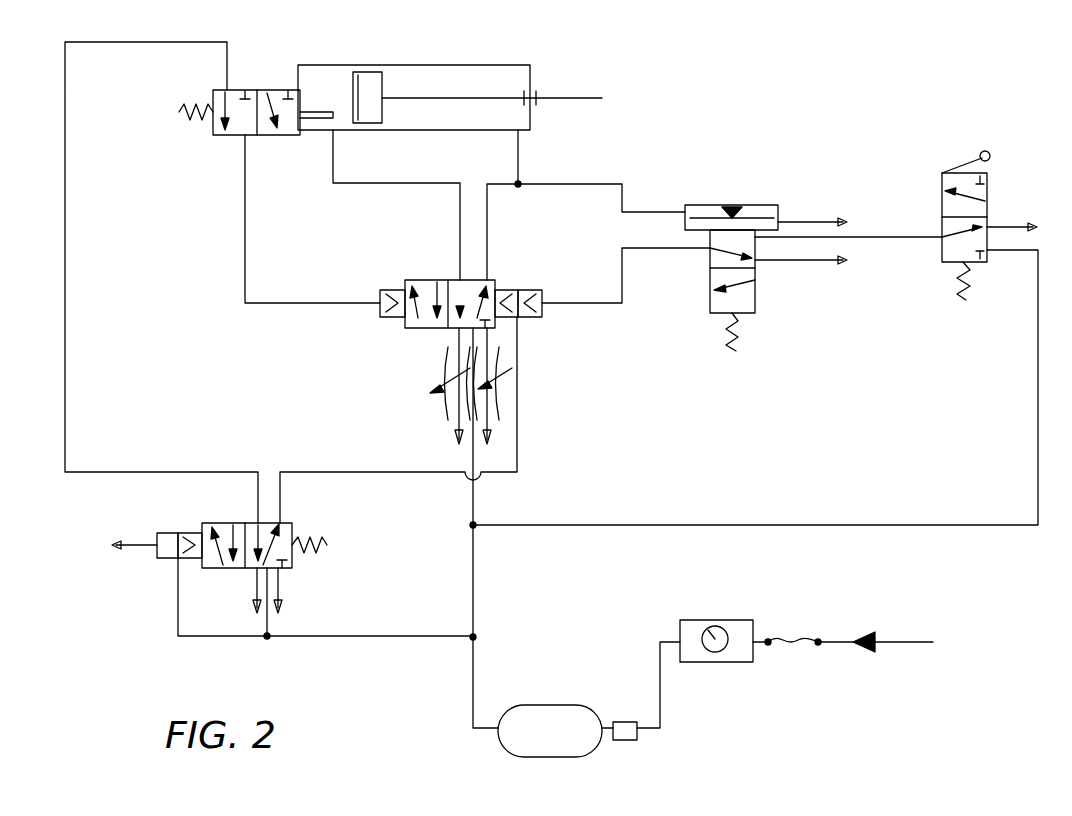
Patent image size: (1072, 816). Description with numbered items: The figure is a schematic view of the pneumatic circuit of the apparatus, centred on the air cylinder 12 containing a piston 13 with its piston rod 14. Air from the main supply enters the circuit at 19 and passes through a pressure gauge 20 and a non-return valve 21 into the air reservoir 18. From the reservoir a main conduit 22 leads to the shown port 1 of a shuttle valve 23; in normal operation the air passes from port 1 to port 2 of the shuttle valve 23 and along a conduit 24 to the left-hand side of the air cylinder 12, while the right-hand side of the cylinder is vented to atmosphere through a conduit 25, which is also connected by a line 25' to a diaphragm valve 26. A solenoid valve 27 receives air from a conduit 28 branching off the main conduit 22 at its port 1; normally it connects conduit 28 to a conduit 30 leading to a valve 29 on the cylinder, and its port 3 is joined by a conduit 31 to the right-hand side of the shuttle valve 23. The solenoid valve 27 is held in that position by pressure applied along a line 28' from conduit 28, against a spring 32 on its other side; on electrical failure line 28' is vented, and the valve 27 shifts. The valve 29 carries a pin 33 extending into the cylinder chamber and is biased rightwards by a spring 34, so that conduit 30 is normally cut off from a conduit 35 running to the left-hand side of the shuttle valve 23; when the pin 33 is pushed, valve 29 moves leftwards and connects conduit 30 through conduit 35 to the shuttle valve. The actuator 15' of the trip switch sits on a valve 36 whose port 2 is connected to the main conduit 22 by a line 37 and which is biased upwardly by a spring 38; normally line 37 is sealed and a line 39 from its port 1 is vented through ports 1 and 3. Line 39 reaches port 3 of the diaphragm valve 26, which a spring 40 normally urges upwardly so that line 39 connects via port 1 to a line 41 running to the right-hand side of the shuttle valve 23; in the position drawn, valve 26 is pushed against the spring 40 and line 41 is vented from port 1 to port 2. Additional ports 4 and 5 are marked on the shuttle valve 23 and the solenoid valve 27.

The air cylinder 12 is at (305, 65).
The piston 13 is at (375, 95).
The piston rod 14 is at (566, 98).
The actuator 15' is at (941, 146).
The air reservoir 18 is at (543, 706).
The air supply entry 19 is at (905, 642).
The pressure gauge 20 is at (715, 626).
The non-return valve 21 is at (624, 722).
The main conduit 22 is at (473, 588).
The shuttle valve 23 is at (423, 282).
The conduit 24 is at (386, 190).
The conduit 25 is at (586, 205).
The line 25' is at (573, 154).
The diaphragm valve 26 is at (735, 180).
The solenoid valve 27 is at (215, 523).
The conduit 28 is at (325, 598).
The line 28' is at (143, 609).
The valve 29 is at (227, 90).
The conduit 30 is at (67, 313).
The conduit 31 is at (322, 472).
The spring 32 is at (327, 545).
The pin 33 is at (322, 122).
The spring 34 is at (179, 112).
The conduit 35 is at (245, 248).
The valve 36 is at (942, 197).
The line 37 is at (1030, 455).
The spring 38 is at (962, 302).
The line 39 is at (890, 240).
The spring 40 is at (728, 354).
The line 41 is at (622, 280).
The port 1 is at (468, 338).
The port 2 is at (458, 278).
The port 3 is at (490, 280).
The port 4 is at (458, 325).
The port 5 is at (490, 328).